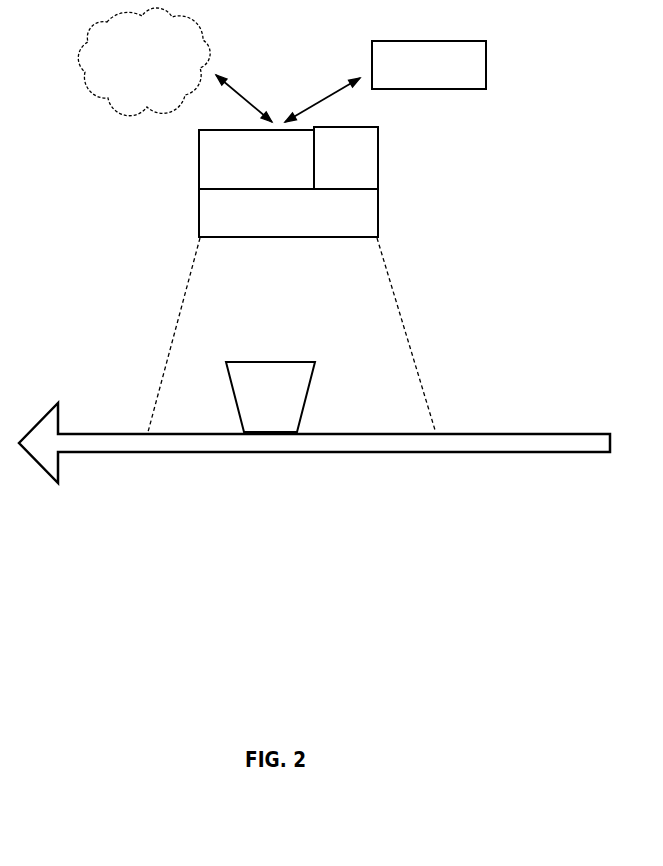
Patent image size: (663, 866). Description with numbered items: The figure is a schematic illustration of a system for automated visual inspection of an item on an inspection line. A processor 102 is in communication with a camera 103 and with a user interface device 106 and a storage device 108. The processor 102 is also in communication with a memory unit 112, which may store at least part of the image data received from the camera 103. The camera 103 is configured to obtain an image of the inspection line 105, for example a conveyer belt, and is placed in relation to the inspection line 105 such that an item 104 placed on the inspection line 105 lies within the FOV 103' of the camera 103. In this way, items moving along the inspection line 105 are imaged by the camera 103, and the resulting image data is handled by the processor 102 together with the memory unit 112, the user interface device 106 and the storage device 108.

The processor 102 is at (222, 174).
The memory unit 112 is at (327, 172).
The camera 103 is at (288, 213).
The FOV 103' is at (269, 335).
The item 104 is at (252, 405).
The inspection line 105 is at (203, 442).
The user interface device 106 is at (405, 78).
The storage device 108 is at (122, 69).